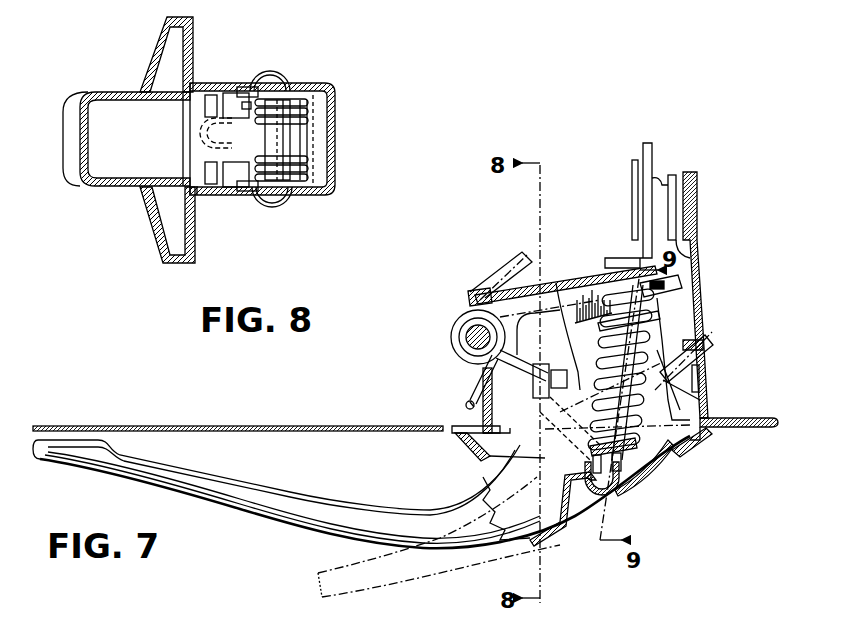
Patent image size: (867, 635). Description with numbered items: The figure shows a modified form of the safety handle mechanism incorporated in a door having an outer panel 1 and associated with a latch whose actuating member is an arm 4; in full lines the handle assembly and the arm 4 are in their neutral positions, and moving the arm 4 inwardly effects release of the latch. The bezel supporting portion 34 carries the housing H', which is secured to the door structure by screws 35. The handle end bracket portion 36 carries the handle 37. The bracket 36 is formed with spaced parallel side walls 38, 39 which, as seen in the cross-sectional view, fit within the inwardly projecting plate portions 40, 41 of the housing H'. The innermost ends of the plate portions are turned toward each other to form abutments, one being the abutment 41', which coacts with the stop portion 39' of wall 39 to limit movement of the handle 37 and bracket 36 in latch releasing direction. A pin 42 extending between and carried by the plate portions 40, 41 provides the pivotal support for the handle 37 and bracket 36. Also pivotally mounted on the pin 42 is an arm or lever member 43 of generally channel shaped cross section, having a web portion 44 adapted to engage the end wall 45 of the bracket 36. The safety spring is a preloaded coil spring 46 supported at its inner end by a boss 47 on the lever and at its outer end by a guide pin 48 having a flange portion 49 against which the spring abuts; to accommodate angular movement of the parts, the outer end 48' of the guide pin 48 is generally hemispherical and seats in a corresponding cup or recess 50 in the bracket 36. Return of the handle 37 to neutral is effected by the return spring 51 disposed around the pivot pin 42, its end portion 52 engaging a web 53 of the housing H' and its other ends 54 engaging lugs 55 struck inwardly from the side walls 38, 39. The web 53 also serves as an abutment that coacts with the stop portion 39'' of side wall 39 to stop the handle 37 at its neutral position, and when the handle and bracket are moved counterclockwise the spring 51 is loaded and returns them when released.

In FIG. 7, the outer panel 1 is at (122, 427).
In FIG. 7, the arm 4 is at (630, 258).
In FIG. 8, the bezel supporting portion 34 is at (148, 212).
In FIG. 7, the bezel supporting portion 34 is at (472, 455).
In FIG. 7, the screws 35 is at (700, 380).
In FIG. 8, the handle end bracket portion 36 is at (102, 100).
In FIG. 7, the handle end bracket portion 36 is at (570, 507).
In FIG. 8, the handle 37 is at (63, 133).
In FIG. 7, the handle 37 is at (326, 512).
In FIG. 8, the side wall 38 is at (208, 92).
In FIG. 8, the side wall 39 is at (211, 211).
In FIG. 7, the side wall 39 is at (581, 336).
In FIG. 7, the stop portion 39' is at (711, 402).
In FIG. 7, the stop portion 39'' is at (511, 400).
In FIG. 8, the plate portion 40 is at (240, 92).
In FIG. 8, the plate portion 41 is at (255, 199).
In FIG. 7, the plate portion 41 is at (593, 317).
In FIG. 7, the abutment 41' is at (701, 363).
In FIG. 8, the pin 42 is at (292, 136).
In FIG. 7, the pin 42 is at (451, 337).
In FIG. 8, the arm or lever member 43 is at (332, 86).
In FIG. 7, the arm or lever member 43 is at (605, 287).
In FIG. 8, the web portion 44 is at (336, 106).
In FIG. 7, the web portion 44 is at (560, 290).
In FIG. 8, the end wall 45 is at (334, 174).
In FIG. 7, the end wall 45 is at (505, 260).
In FIG. 7, the coil spring 46 is at (670, 327).
In FIG. 7, the boss 47 is at (672, 295).
In FIG. 7, the guide pin 48 is at (739, 407).
In FIG. 7, the outer end of guide pin 48' is at (627, 487).
In FIG. 7, the flange portion 49 is at (652, 468).
In FIG. 7, the cup or recess 50 is at (607, 500).
In FIG. 8, the return spring 51 is at (278, 75).
In FIG. 7, the return spring 51 is at (456, 312).
In FIG. 8, the end portion 52 is at (205, 133).
In FIG. 7, the end portion 52 is at (468, 403).
In FIG. 7, the web 53 is at (483, 425).
In FIG. 8, the other ends 54 is at (280, 205).
In FIG. 7, the other ends 54 is at (524, 362).
In FIG. 8, the lugs 55 is at (212, 95).
In FIG. 7, the lugs 55 is at (552, 385).
In FIG. 8, the housing H' is at (184, 54).
In FIG. 7, the housing H' is at (562, 263).